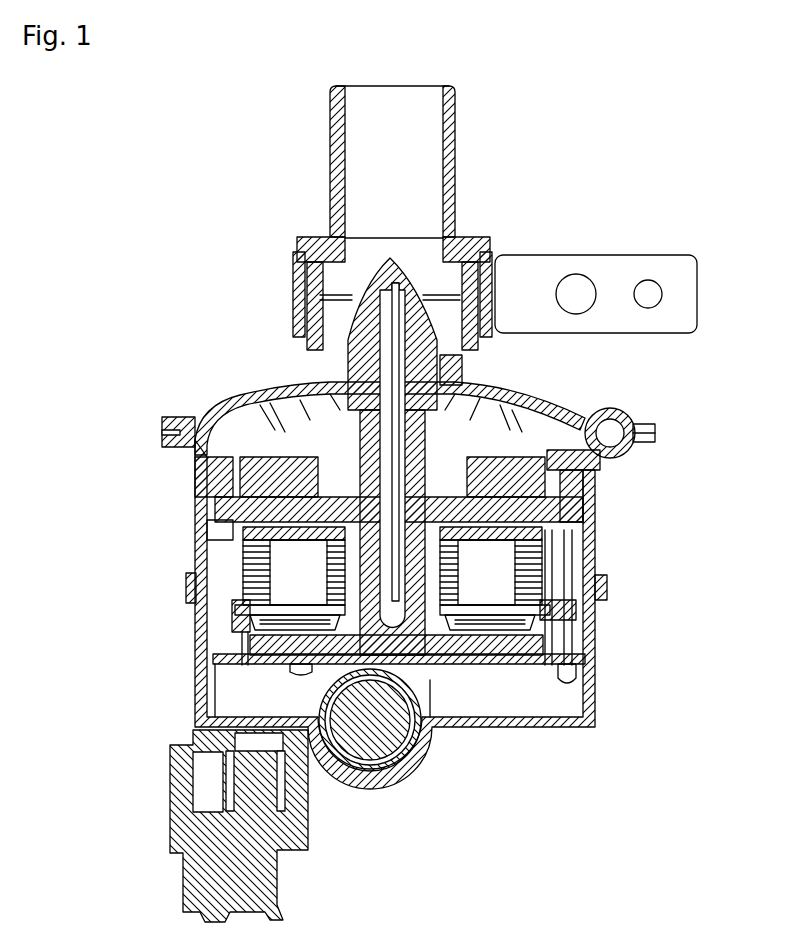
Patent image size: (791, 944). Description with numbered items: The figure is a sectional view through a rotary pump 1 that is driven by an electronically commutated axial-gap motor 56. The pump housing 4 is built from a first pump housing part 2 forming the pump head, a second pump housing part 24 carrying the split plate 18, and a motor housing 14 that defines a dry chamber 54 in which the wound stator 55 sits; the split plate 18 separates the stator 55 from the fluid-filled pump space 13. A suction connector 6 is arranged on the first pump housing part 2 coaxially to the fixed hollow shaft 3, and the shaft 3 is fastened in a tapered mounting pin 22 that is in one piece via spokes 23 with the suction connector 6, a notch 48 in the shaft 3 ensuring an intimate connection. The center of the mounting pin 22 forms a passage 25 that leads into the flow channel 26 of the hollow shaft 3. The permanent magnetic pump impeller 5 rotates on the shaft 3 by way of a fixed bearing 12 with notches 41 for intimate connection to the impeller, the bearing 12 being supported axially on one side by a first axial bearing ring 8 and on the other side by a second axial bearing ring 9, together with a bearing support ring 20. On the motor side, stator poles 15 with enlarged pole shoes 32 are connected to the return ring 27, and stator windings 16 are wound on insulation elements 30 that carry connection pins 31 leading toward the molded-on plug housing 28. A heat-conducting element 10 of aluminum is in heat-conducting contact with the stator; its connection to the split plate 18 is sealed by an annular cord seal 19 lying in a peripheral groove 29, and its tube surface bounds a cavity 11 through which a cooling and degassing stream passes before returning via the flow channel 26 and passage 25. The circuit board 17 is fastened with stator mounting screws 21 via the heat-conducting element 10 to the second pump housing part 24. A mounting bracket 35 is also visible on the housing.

The rotary pump 1 is at (662, 100).
The first pump housing part 2 is at (575, 395).
The shaft 3 is at (345, 330).
The pump housing 4 is at (637, 459).
The pump impeller 5 is at (590, 405).
The suction connector 6 is at (450, 128).
The first axial bearing ring 8 is at (473, 365).
The second axial bearing ring 9 is at (470, 486).
The heat-conducting element 10 is at (360, 632).
The cavity 11 is at (395, 620).
The fixed bearing 12 is at (300, 367).
The pump space 13 is at (490, 497).
The motor housing 14 is at (588, 675).
The stator poles 15 is at (300, 573).
The stator windings 16 is at (263, 590).
The circuit board 17 is at (520, 657).
The split plate 18 is at (228, 520).
The annular cord seal 19 is at (425, 613).
The bearing support ring 20 is at (327, 480).
The stator mounting screws 21 is at (295, 672).
The mounting pin 22 is at (347, 290).
The spokes 23 is at (302, 312).
The second pump housing part 24 is at (230, 550).
The passage 25 is at (397, 283).
The flow channel 26 is at (230, 455).
The return ring 27 is at (488, 613).
The plug housing 28 is at (217, 755).
The groove 29 is at (235, 511).
The insulation elements 30 is at (240, 603).
The connection pins 31 is at (262, 638).
The pole shoes 32 is at (433, 508).
The mounting bracket 35 is at (492, 283).
The notches 41 is at (373, 387).
The notch 48 is at (342, 318).
The dry chamber 54 is at (560, 688).
The stator 55 is at (547, 690).
The axial motor 56 is at (610, 590).